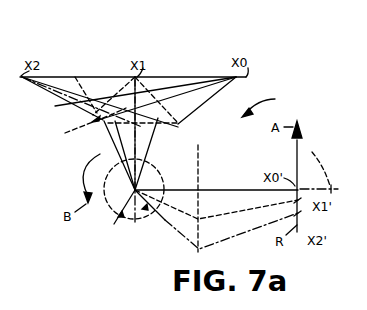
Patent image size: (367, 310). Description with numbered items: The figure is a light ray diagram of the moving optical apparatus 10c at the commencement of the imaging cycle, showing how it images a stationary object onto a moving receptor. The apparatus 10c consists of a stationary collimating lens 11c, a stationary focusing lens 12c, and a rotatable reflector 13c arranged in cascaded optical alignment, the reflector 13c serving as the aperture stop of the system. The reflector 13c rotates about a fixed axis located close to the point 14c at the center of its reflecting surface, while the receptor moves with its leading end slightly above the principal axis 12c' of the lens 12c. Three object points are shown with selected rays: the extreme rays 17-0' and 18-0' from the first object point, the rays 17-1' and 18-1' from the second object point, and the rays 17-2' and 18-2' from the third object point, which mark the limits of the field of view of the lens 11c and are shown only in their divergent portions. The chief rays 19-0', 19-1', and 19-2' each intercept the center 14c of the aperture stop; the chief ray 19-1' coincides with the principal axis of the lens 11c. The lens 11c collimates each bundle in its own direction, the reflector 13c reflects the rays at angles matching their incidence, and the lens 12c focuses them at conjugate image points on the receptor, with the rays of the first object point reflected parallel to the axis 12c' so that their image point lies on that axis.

The moving optical apparatus 10c is at (270, 103).
The stationary collimating lens 11c is at (84, 127).
The stationary focusing lens 12c is at (216, 196).
The principal axis of lens 12c 12c' is at (319, 168).
The rotatable reflector 13c is at (153, 222).
The point on reflector surface 14c is at (114, 225).
The light ray 17-0' is at (145, 69).
The light ray 17-1' is at (100, 92).
The light ray 17-2' is at (82, 102).
The light ray 18-0' is at (164, 105).
The light ray 18-1' is at (151, 90).
The light ray 18-2' is at (105, 74).
The chief ray 19-0' is at (160, 154).
The chief ray 19-1' is at (153, 111).
The chief ray 19-2' is at (103, 155).